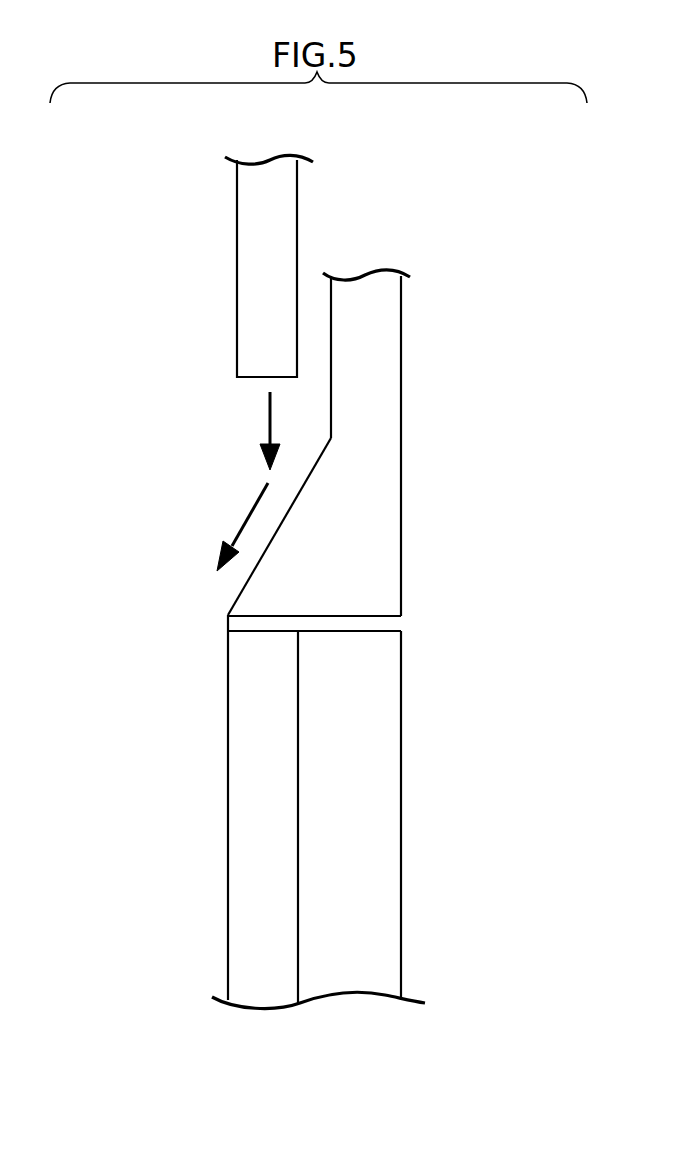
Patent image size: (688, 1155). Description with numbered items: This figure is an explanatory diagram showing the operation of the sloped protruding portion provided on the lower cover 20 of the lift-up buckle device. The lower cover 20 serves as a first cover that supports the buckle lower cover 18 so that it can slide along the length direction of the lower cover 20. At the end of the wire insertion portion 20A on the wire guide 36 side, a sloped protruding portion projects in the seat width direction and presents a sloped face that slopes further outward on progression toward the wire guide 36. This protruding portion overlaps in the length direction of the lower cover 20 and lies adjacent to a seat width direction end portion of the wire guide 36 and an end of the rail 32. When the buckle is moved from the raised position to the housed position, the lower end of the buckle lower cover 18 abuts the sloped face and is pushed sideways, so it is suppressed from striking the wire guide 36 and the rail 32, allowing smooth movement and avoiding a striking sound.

The buckle lower cover 18 is at (237, 235).
The wire insertion portion 20A is at (401, 316).
The lower cover 20 is at (402, 460).
The rail 32 is at (228, 736).
The wire guide 36 is at (401, 768).